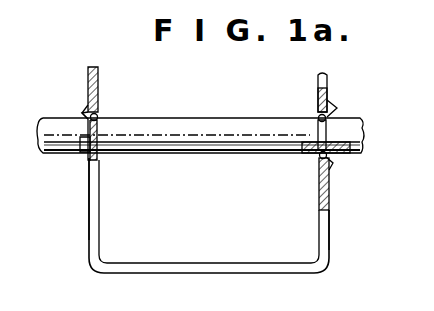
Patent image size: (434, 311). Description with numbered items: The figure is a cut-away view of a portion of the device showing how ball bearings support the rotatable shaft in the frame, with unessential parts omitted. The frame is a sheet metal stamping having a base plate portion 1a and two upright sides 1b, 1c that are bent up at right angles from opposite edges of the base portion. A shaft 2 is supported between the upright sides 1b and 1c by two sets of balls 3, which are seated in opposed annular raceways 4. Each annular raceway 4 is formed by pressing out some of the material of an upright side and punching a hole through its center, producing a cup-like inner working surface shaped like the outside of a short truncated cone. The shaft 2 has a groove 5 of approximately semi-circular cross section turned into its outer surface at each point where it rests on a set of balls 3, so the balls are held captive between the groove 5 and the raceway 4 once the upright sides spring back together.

The base plate portion 1a is at (209, 262).
The upright side 1b is at (330, 225).
The upright side 1c is at (88, 222).
The shaft 2 is at (213, 113).
The balls 3 is at (98, 117).
The annular raceway 4 is at (97, 114).
The groove 5 is at (90, 130).